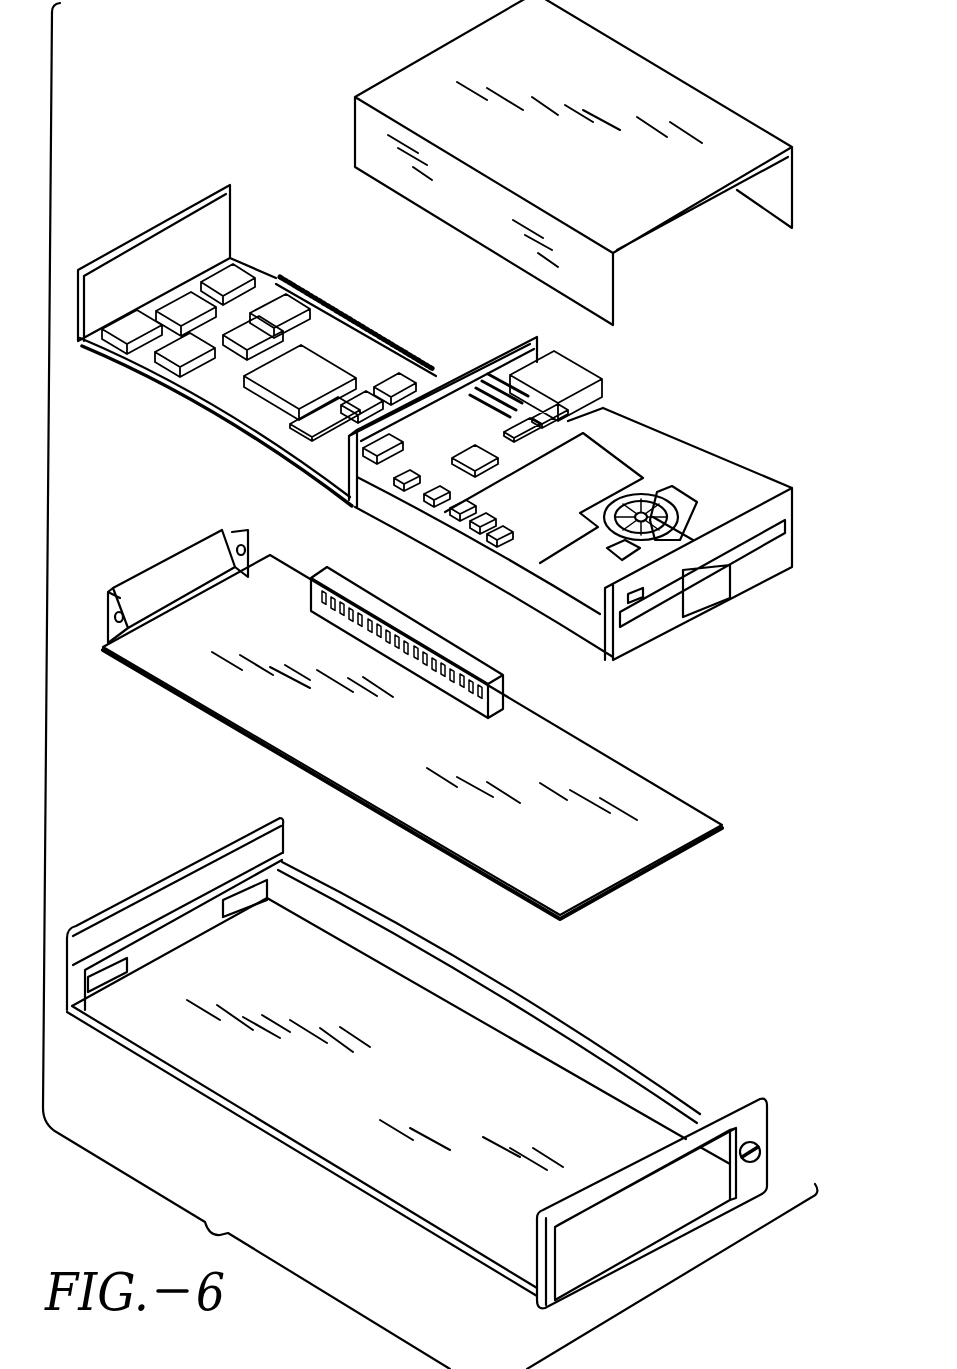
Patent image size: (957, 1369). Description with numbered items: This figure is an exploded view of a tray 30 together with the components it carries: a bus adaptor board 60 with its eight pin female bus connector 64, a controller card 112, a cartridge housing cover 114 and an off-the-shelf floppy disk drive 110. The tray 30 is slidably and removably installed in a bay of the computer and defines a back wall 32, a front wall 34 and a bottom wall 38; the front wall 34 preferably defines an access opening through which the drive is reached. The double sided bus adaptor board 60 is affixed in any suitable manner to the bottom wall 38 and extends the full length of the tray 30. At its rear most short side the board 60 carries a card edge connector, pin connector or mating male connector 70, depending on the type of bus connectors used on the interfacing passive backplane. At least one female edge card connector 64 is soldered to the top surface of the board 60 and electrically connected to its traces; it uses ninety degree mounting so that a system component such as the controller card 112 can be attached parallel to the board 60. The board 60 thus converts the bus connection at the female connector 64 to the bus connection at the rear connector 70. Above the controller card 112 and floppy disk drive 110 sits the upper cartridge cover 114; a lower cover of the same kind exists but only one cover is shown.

The cartridge cover 114 is at (655, 83).
The controller card 112 is at (233, 402).
The floppy disk drive 110 is at (655, 455).
The mating male connector 70 is at (158, 572).
The female edge card connector 64 is at (458, 677).
The bus adaptor board 60 is at (668, 811).
The tray 30 is at (192, 1110).
The back wall 32 is at (152, 902).
The front wall 34 is at (752, 1185).
The bottom wall 38 is at (138, 1028).